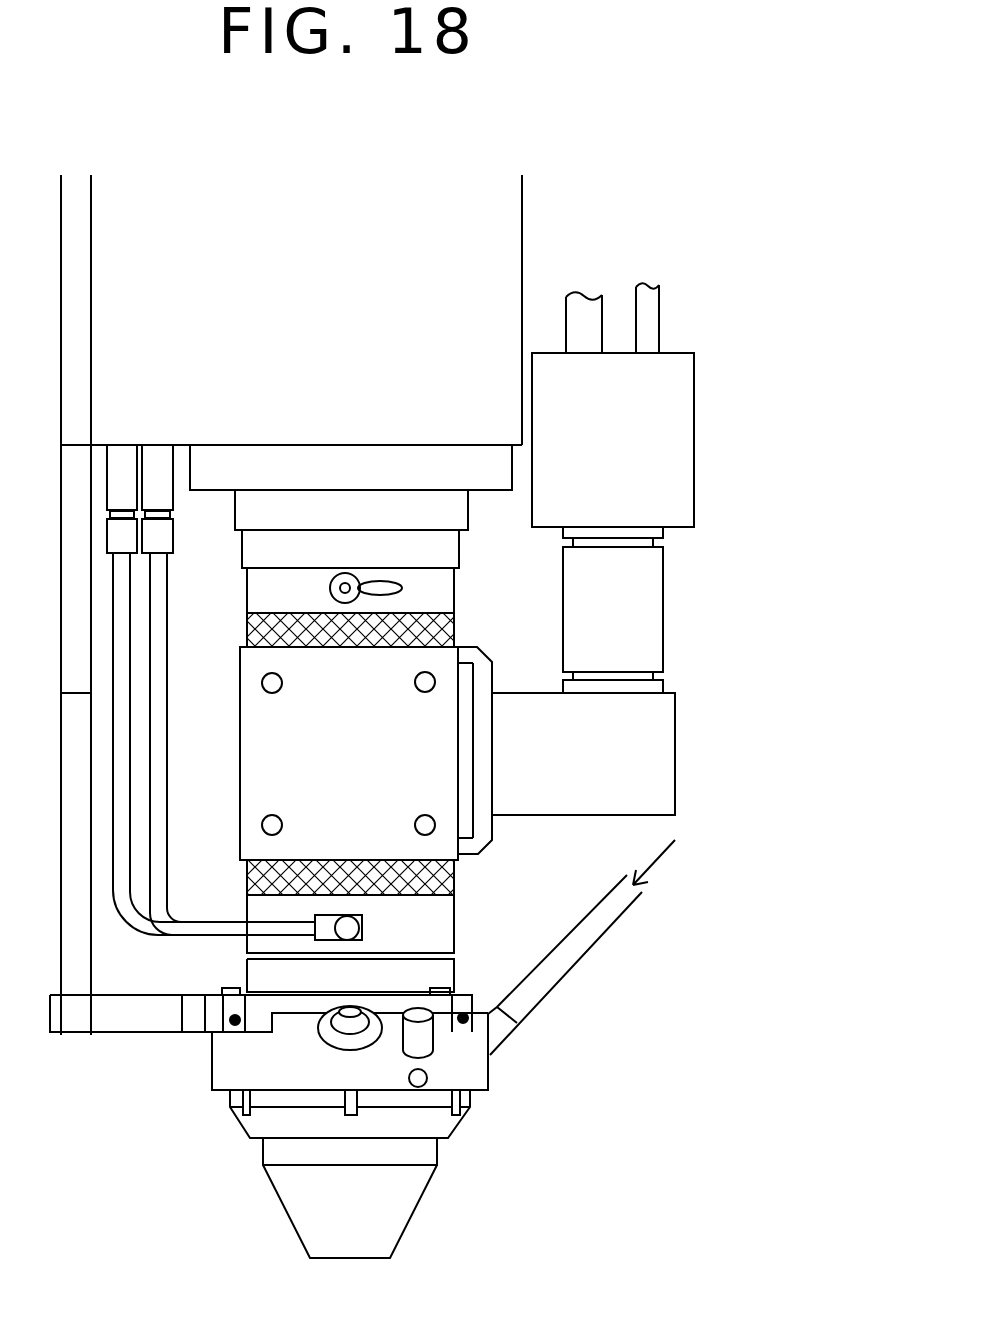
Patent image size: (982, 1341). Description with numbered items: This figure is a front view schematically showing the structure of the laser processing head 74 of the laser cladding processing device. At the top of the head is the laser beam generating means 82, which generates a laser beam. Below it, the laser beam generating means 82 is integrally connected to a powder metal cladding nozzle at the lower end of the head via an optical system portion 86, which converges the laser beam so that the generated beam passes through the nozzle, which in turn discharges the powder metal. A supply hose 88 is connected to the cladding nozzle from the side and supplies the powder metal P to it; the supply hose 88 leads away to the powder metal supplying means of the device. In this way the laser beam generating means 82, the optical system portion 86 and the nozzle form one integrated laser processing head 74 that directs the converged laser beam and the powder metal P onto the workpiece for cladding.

The laser processing head 74 is at (780, 167).
The laser beam generating means 82 is at (475, 322).
The optical system portion 86 is at (380, 775).
The supply hose 88 is at (560, 960).
The powder metal P is at (667, 851).